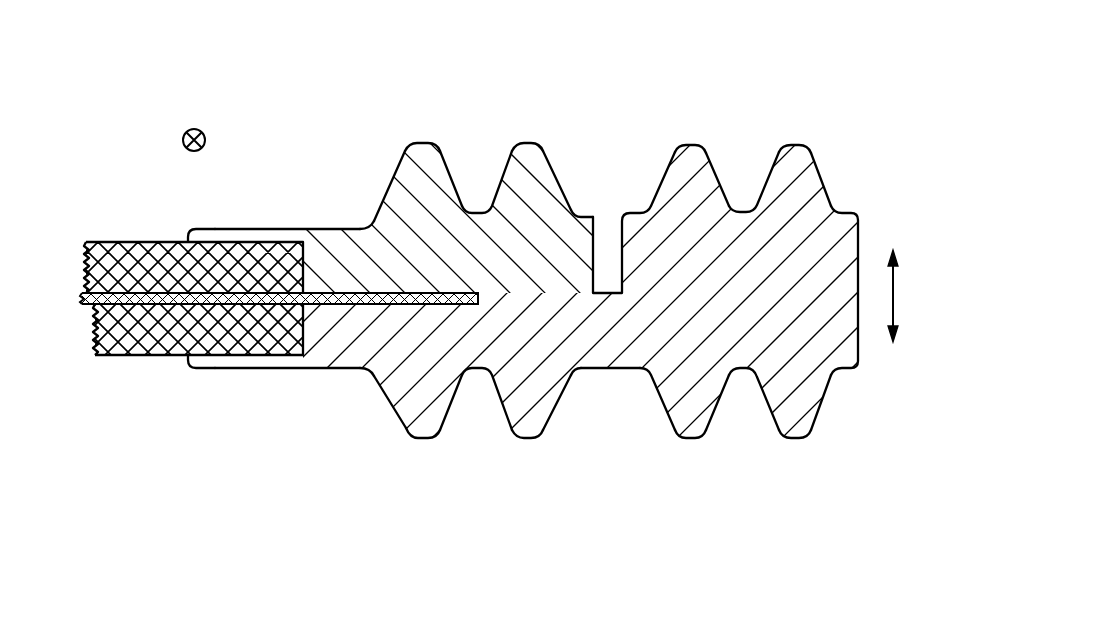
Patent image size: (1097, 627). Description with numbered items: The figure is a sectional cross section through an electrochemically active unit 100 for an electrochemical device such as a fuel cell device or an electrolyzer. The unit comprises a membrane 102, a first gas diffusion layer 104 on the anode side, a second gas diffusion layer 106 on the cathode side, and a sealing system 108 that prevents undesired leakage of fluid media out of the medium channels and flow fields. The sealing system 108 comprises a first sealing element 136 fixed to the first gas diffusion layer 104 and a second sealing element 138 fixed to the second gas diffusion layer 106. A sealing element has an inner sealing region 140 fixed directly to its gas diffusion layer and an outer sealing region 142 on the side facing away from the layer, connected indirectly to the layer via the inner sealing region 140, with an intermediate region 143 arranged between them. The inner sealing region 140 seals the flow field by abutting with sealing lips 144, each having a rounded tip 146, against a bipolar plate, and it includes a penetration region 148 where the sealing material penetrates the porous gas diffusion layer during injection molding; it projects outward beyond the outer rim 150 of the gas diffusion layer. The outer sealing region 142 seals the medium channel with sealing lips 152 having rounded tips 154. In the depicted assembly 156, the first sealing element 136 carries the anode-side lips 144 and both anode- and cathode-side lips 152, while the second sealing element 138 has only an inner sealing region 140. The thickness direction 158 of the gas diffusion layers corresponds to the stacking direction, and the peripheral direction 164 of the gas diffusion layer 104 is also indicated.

The electrochemically active unit 100 is at (112, 225).
The membrane 102 is at (102, 333).
The first gas diffusion layer 104 is at (140, 358).
The second gas diffusion layer 106 is at (127, 272).
The sealing system 108 is at (710, 130).
The first sealing element 136 is at (623, 357).
The second sealing element 138 is at (553, 170).
The inner sealing region 140 is at (415, 207).
The outer sealing region 142 is at (752, 340).
The intermediate region 143 is at (593, 357).
The sealing lip 144 is at (430, 155).
The rounded tip 146 is at (423, 143).
The penetration region 148 is at (248, 263).
The outer rim 150 is at (317, 270).
The sealing lip 152 is at (695, 160).
The rounded tip 154 is at (692, 145).
The assembly 156 is at (177, 363).
The thickness direction 158 is at (893, 297).
The peripheral direction 164 is at (194, 129).